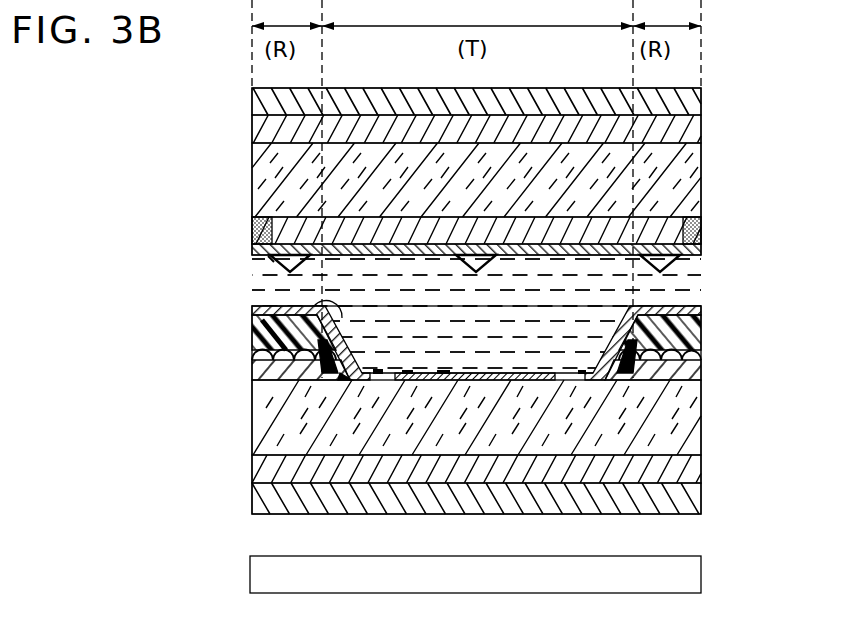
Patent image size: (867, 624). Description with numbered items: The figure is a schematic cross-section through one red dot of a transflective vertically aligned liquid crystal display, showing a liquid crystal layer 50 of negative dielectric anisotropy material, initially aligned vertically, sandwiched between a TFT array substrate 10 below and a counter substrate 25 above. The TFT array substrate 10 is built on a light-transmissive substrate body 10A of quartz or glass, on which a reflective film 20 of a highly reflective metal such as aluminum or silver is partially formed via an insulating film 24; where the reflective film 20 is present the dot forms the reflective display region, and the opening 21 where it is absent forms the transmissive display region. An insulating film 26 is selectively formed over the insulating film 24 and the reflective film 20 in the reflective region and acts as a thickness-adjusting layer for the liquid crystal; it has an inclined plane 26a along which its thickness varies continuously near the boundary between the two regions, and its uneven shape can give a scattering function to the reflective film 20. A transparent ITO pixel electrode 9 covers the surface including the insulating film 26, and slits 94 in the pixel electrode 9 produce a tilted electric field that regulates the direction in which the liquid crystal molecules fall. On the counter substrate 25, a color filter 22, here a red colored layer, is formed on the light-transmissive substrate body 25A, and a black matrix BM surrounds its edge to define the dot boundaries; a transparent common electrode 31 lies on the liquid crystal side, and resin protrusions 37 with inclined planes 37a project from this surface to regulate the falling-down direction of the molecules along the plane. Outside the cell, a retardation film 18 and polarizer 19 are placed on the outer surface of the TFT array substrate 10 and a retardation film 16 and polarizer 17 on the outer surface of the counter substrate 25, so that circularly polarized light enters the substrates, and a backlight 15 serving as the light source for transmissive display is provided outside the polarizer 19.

The polarizer 17 is at (701, 97).
The retardation film 16 is at (701, 128).
The counter substrate 25 is at (162, 89).
The substrate body 25A is at (690, 157).
The color filter 22 is at (686, 228).
The black matrix BM is at (252, 237).
The common electrode 31 is at (701, 247).
The protrusions 37 is at (291, 273).
The inclined planes 37a is at (268, 257).
The liquid crystal layer 50 is at (701, 286).
The pixel electrode 9 is at (701, 312).
The insulating film 26 is at (701, 335).
The inclined plane 26a is at (270, 337).
The reflective film 20 is at (701, 354).
The insulating film 24 is at (701, 372).
The opening 21 is at (340, 380).
The slits 94 is at (397, 371).
The TFT array substrate 10 is at (162, 307).
The substrate body 10A is at (695, 424).
The retardation film 18 is at (701, 478).
The polarizer 19 is at (701, 503).
The backlight 15 is at (690, 575).